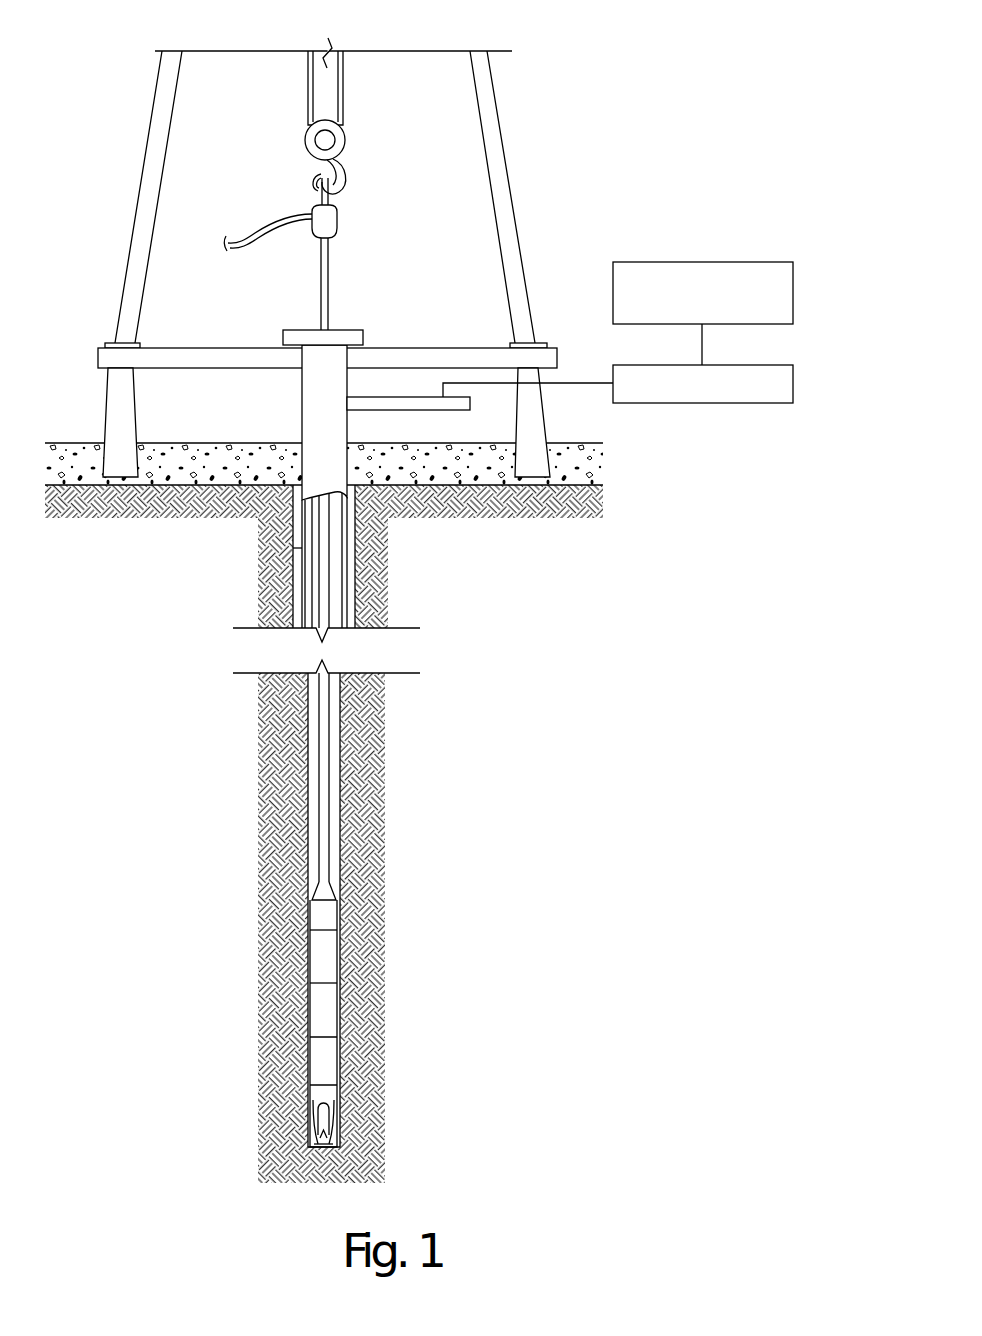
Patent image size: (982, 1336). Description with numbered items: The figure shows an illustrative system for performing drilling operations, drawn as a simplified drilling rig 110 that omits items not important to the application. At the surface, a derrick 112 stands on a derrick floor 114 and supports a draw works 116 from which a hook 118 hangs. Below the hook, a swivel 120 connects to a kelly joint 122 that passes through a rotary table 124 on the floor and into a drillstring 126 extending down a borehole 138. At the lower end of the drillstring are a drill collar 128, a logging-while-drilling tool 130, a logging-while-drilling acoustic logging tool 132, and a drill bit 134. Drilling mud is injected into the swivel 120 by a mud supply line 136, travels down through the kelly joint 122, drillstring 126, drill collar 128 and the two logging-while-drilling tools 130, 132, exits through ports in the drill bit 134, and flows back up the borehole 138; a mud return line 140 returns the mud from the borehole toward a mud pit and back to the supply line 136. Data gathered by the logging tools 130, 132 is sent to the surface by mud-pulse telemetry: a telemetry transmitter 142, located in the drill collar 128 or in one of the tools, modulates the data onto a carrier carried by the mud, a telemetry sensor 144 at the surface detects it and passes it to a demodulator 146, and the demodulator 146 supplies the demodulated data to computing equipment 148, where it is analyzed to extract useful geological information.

The drilling rig 110 is at (577, 63).
The derrick 112 is at (510, 182).
The derrick floor 114 is at (245, 345).
The draw works 116 is at (345, 80).
The hook 118 is at (345, 165).
The swivel 120 is at (340, 212).
The kelly joint 122 is at (330, 270).
The rotary table 124 is at (358, 328).
The drillstring 126 is at (327, 722).
The drill collar 128 is at (325, 962).
The logging-while-drilling (LWD) tool 130 is at (325, 1012).
The logging-while-drilling (LWD) acoustic logging tool 132 is at (325, 1062).
The drill bit 134 is at (325, 1118).
The mud supply line 136 is at (272, 215).
The borehole 138 is at (340, 797).
The mud return line 140 is at (407, 412).
The telemetry transmitter 142 is at (325, 892).
The telemetry sensor 144 is at (443, 395).
The demodulator 146 is at (728, 403).
The computing equipment 148 is at (717, 262).